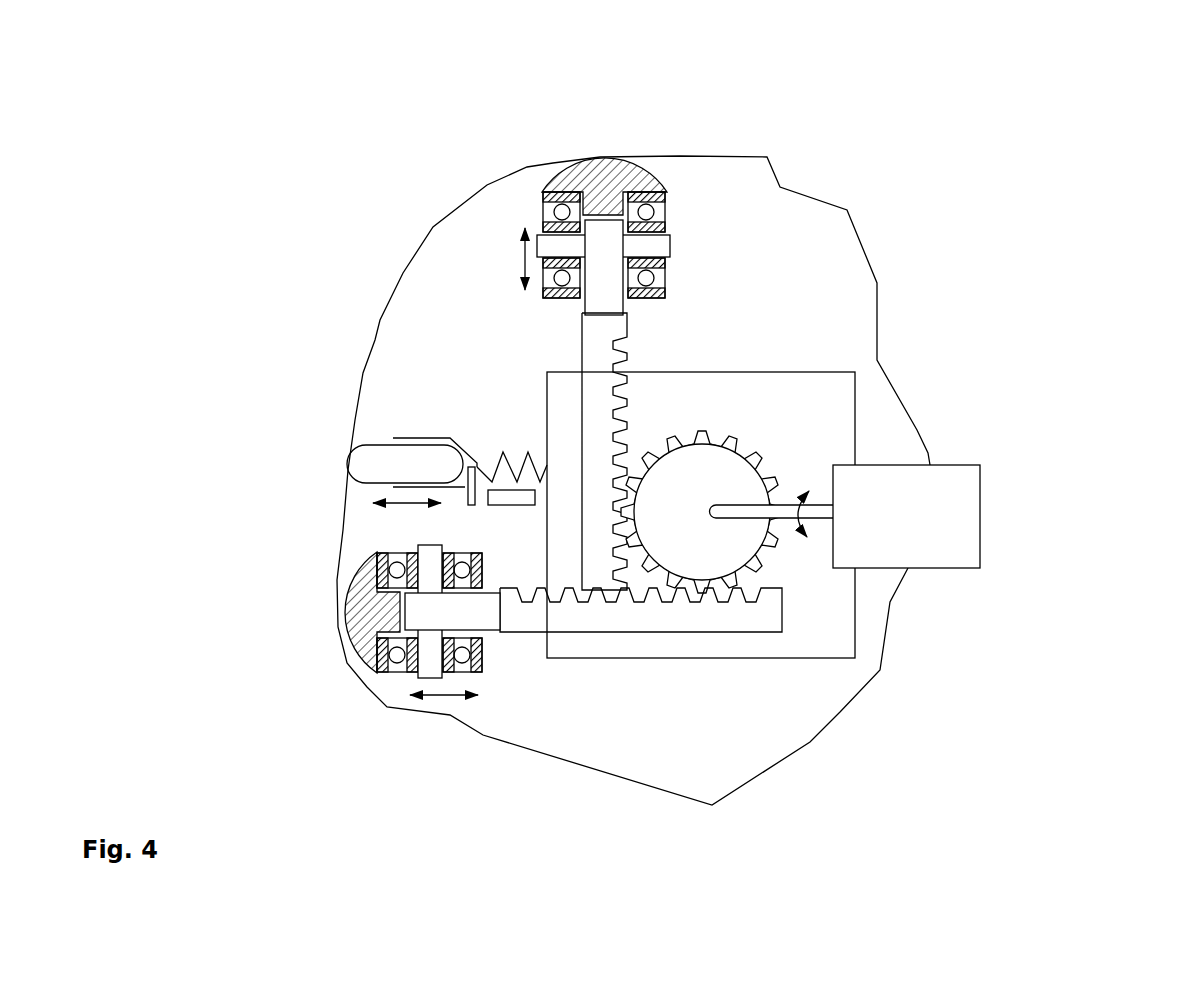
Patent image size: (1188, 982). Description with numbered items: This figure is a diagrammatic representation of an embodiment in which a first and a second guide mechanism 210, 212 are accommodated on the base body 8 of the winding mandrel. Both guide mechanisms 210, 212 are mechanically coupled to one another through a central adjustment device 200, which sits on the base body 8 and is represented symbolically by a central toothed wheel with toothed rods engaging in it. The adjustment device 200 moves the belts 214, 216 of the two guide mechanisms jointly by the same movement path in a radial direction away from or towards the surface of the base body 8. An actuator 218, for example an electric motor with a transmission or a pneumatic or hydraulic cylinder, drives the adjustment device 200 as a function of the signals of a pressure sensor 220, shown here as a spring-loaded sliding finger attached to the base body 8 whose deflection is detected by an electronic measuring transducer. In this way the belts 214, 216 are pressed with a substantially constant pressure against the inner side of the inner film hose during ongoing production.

The first guide mechanism 210 is at (553, 118).
The second guide mechanism 212 is at (345, 707).
The belt 214 is at (633, 183).
The belt 216 is at (357, 620).
The base body 8 is at (770, 370).
The central adjustment device 200 is at (783, 438).
The actuator 218 is at (953, 483).
The pressure sensor 220 is at (458, 422).